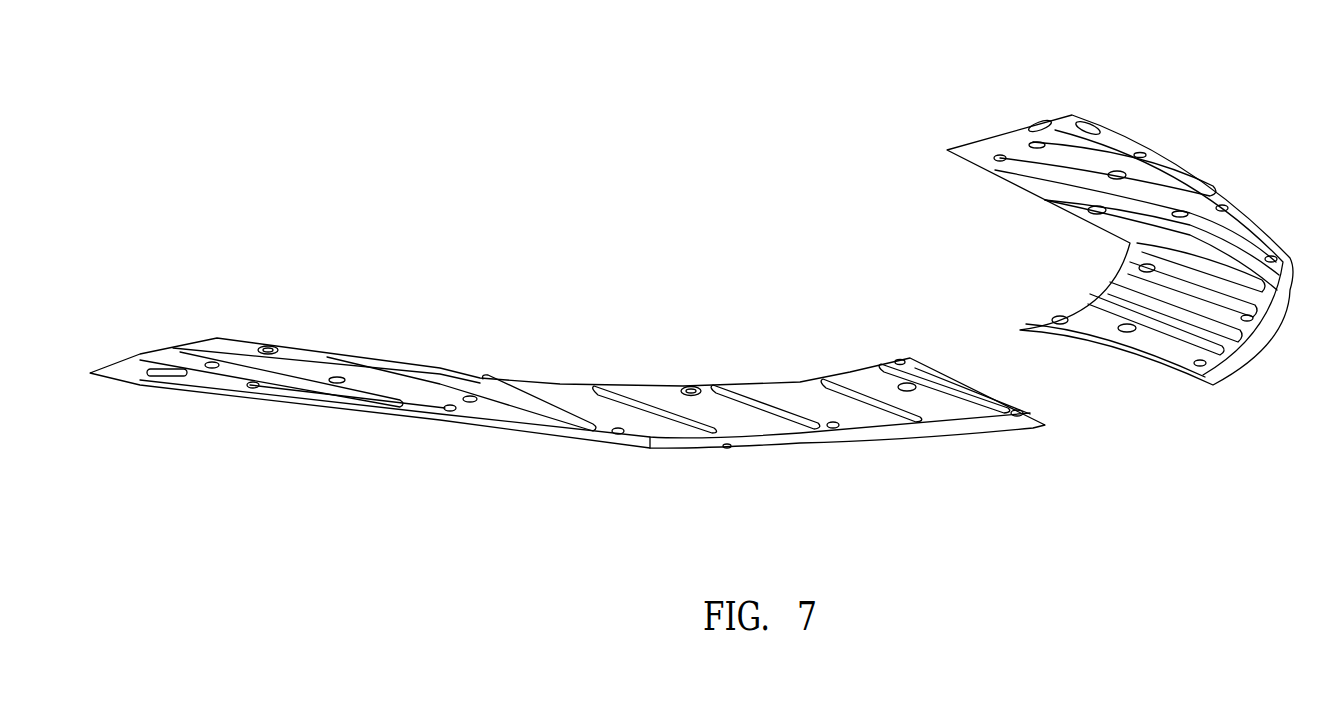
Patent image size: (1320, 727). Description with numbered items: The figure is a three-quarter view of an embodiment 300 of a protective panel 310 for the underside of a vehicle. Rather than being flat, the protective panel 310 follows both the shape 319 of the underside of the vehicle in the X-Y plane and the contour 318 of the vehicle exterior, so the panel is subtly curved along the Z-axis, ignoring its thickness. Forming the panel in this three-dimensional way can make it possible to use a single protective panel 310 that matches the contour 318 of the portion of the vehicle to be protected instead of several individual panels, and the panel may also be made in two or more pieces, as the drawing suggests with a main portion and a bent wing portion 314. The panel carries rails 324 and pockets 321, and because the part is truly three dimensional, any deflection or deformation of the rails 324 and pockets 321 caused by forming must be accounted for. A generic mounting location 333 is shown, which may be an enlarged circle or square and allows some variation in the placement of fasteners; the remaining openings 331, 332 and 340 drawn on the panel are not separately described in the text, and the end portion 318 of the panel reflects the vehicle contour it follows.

The embodiment 300 is at (558, 47).
The protective panel 310 is at (597, 310).
The wing plate 314 is at (1120, 292).
The contour 318 is at (975, 375).
The shape 319 is at (483, 428).
The pockets 321 is at (545, 388).
The rails 324 is at (1257, 310).
The fastener hole 331 is at (727, 452).
The mounting hole 332 is at (690, 390).
The generic mounting location 333 is at (1117, 170).
The opening 340 is at (1095, 126).